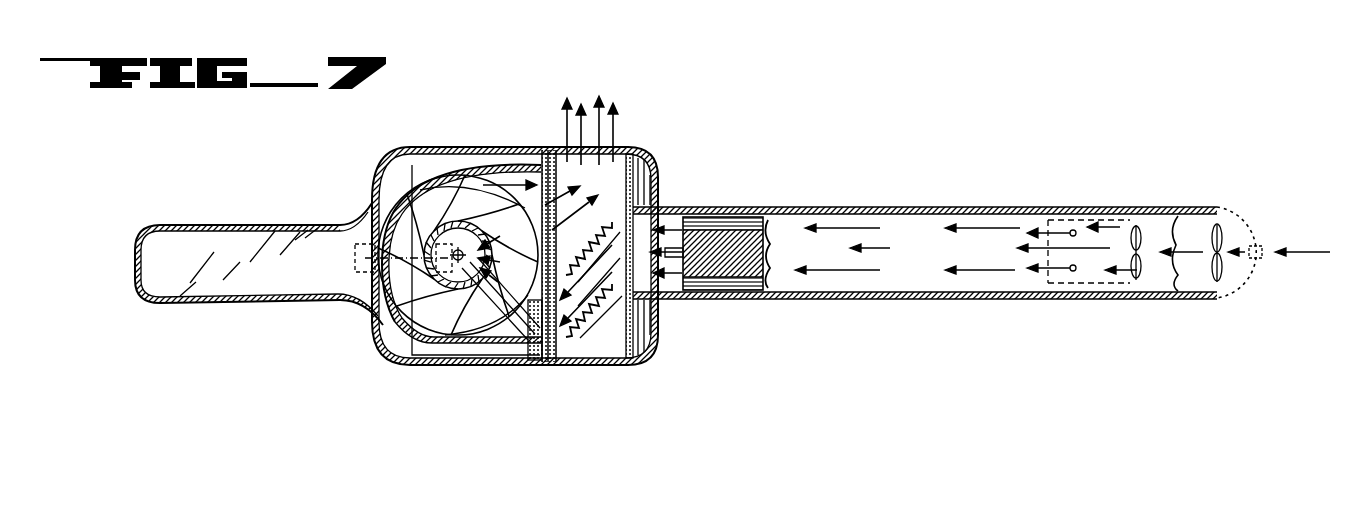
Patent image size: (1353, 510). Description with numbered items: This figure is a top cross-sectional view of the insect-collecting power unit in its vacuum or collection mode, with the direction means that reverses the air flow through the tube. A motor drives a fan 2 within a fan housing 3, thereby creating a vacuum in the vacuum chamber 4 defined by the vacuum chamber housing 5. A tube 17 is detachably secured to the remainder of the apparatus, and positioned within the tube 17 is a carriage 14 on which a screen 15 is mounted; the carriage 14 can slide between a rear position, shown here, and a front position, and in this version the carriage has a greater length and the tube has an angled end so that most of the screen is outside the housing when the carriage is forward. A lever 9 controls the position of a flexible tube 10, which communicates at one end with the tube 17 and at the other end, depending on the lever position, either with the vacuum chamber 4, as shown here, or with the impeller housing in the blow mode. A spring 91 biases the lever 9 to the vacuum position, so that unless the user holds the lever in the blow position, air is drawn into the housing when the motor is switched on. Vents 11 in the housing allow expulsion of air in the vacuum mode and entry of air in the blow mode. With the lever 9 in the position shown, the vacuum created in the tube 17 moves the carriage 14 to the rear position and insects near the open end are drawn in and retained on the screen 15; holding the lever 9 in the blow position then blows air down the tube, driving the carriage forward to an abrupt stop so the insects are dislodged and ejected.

The fan 2 is at (375, 318).
The fan housing 3 is at (358, 206).
The vacuum chamber 4 is at (482, 315).
The vacuum chamber housing 5 is at (512, 322).
The lever 9 is at (558, 333).
The spring 91 is at (522, 335).
The flexible tube 10 is at (603, 216).
The vents 11 is at (613, 140).
The carriage 14 is at (740, 262).
The screen 15 is at (775, 270).
The tube 17 is at (988, 300).